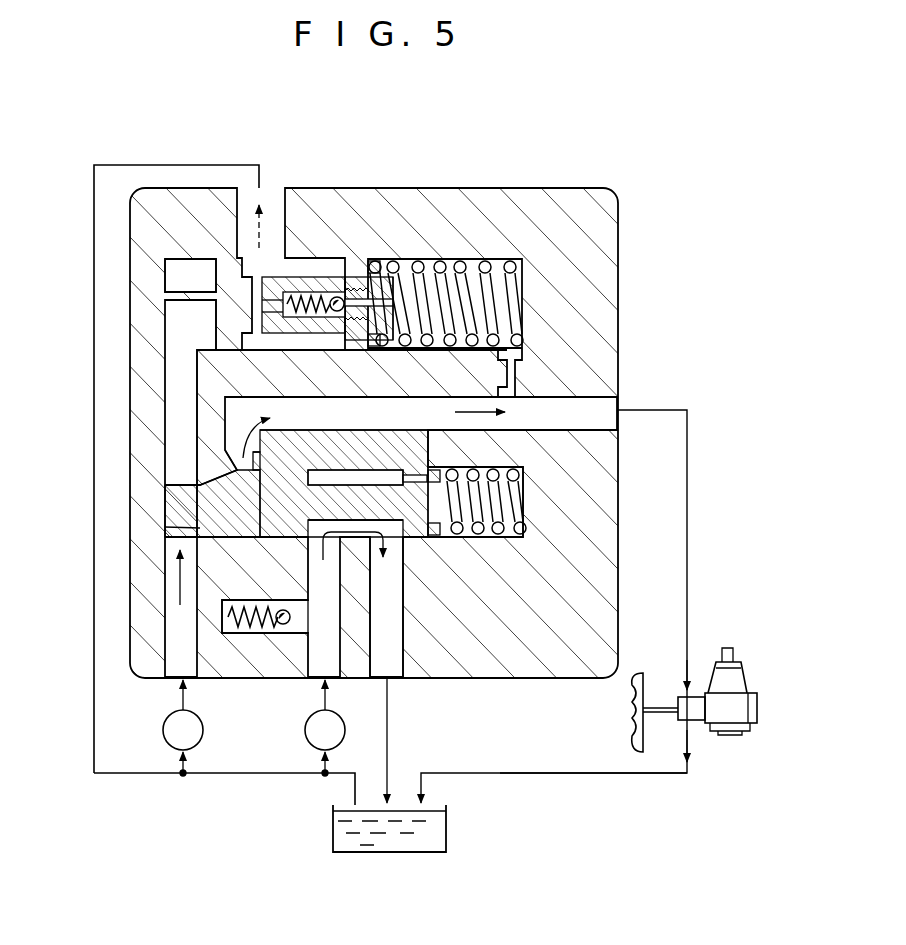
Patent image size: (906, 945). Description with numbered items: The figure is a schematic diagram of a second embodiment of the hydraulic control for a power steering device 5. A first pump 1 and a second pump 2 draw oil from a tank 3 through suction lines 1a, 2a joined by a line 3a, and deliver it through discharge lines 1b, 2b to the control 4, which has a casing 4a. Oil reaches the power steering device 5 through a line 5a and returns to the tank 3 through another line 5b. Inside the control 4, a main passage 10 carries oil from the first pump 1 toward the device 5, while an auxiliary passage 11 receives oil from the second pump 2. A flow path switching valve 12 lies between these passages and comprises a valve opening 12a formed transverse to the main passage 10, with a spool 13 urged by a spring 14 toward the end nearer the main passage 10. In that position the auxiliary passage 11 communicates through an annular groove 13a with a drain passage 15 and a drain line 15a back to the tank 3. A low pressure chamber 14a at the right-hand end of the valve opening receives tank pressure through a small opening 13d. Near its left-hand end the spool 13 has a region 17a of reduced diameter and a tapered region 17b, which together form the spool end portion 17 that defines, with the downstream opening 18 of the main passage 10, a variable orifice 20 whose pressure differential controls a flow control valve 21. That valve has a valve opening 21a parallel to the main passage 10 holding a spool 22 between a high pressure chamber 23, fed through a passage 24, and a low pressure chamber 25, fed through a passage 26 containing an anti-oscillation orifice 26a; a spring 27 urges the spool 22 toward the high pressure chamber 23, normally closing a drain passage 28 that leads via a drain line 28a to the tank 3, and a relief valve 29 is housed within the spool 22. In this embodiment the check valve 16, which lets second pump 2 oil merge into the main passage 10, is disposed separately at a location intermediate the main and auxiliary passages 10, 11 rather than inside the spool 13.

The first pump 1 is at (162, 731).
The suction line 1a is at (186, 766).
The discharge line 1b is at (181, 694).
The second pump 2 is at (345, 732).
The suction line 2a is at (322, 763).
The discharge line 2b is at (328, 692).
The tank 3 is at (381, 853).
The line 3a is at (247, 774).
The control 4 is at (593, 178).
The casing 4a is at (598, 246).
The power steering device 5 is at (728, 722).
The line 5a is at (690, 556).
The line 5b is at (578, 774).
The main passage 10 is at (570, 412).
The auxiliary passage 11 is at (304, 660).
The flow path switching valve 12 is at (357, 468).
The valve opening 12a is at (476, 535).
The spool 13 is at (337, 492).
The annular groove 13a is at (355, 505).
The small opening 13d is at (415, 470).
The spring 14 is at (472, 470).
The low pressure chamber 14a is at (507, 505).
The drain passage 15 is at (401, 655).
The drain line 15a is at (390, 745).
The check valve 16 is at (278, 628).
The plug 17 is at (212, 503).
The region of reduced diameter 17a is at (236, 538).
The tapered region 17b is at (172, 527).
The downstream opening 18 is at (258, 470).
The variable orifice 20 is at (231, 465).
The flow control valve 21 is at (329, 260).
The valve opening 21a is at (462, 262).
The spool 22 is at (293, 280).
The high pressure chamber 23 is at (180, 275).
The passage 24 is at (175, 396).
The low pressure chamber 25 is at (503, 300).
The passage 26 is at (517, 392).
The orifice 26a is at (520, 369).
The spring 27 is at (490, 258).
The drain passage 28 is at (282, 189).
The drain line 28a is at (214, 165).
The relief valve 29 is at (345, 298).